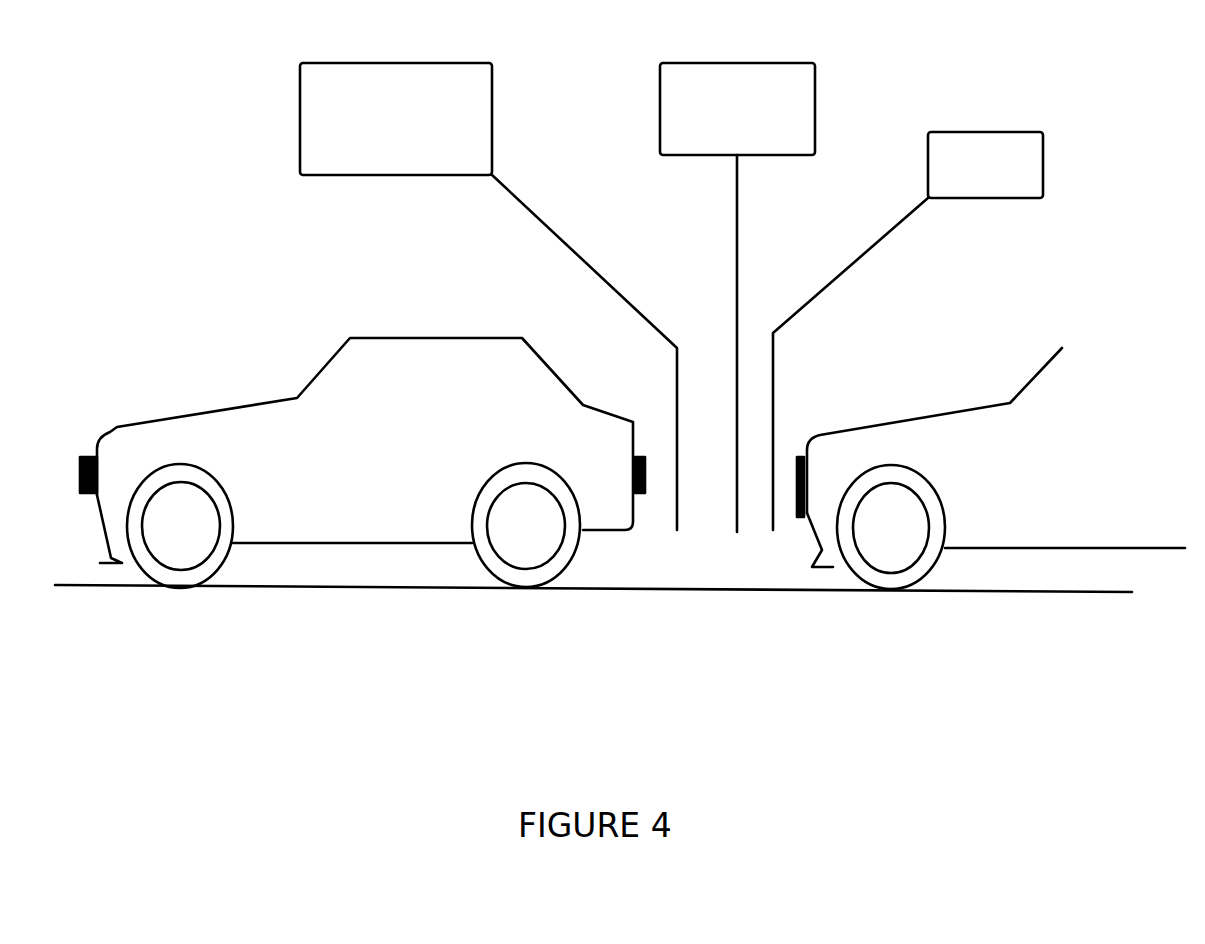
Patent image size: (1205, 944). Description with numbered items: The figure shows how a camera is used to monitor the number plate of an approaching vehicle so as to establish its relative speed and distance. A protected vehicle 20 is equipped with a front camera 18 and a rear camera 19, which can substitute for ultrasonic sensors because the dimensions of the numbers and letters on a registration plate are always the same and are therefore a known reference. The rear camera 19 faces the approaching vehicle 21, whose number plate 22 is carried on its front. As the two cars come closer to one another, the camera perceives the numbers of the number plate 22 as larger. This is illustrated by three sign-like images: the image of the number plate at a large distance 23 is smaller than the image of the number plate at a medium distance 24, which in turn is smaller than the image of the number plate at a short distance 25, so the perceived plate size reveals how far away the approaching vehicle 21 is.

The front camera 18 is at (76, 479).
The rear camera 19 is at (648, 500).
The protected vehicle 20 is at (365, 463).
The approaching vehicle 21 is at (996, 468).
The number plate 22 is at (799, 522).
The image of the number plate at a large distance 23 is at (908, 331).
The image of the number plate at a medium distance 24 is at (759, 297).
The image of the number plate at a short distance 25 is at (488, 296).